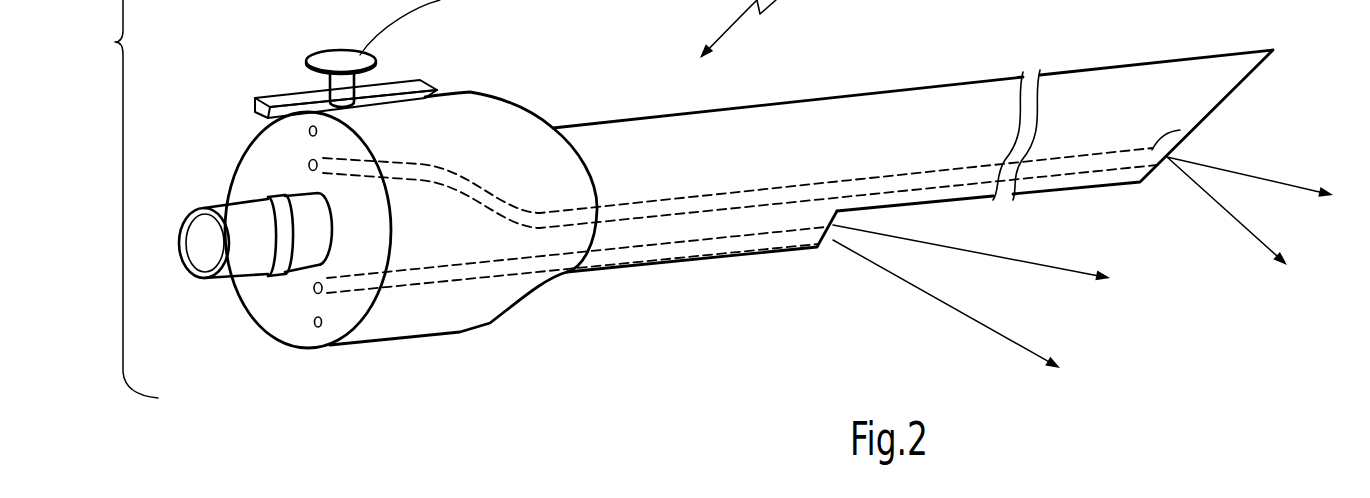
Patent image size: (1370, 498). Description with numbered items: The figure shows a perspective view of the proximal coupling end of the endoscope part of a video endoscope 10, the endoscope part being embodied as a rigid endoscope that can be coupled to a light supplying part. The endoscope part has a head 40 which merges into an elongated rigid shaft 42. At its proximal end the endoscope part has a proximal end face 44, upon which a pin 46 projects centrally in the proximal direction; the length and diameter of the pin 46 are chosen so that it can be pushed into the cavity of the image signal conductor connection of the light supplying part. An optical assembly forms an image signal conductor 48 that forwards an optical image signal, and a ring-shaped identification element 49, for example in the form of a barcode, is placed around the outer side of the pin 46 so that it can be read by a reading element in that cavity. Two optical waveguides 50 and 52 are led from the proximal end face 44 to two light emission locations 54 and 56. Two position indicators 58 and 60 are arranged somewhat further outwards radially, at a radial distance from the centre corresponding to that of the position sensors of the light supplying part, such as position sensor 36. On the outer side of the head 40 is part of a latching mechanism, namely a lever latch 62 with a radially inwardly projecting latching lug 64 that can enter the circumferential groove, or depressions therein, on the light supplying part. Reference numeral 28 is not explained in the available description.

The video endoscope 10 is at (121, 199).
The connecting element 28 is at (263, 0).
The position sensor 36 is at (320, 0).
The head 40 is at (507, 127).
The shaft 42 is at (938, 105).
The proximal end face 44 is at (348, 308).
The pin 46 is at (243, 250).
The image signal conductor 48 is at (203, 250).
The identification element 49 is at (267, 207).
The optical waveguide 50 is at (310, 163).
The optical waveguide 52 is at (313, 290).
The light emission location 54 is at (1180, 130).
The light emission location 56 is at (838, 242).
The position indicator 58 is at (309, 132).
The position indicator 60 is at (314, 326).
The lever latch 62 is at (402, 87).
The latching lug 64 is at (253, 98).